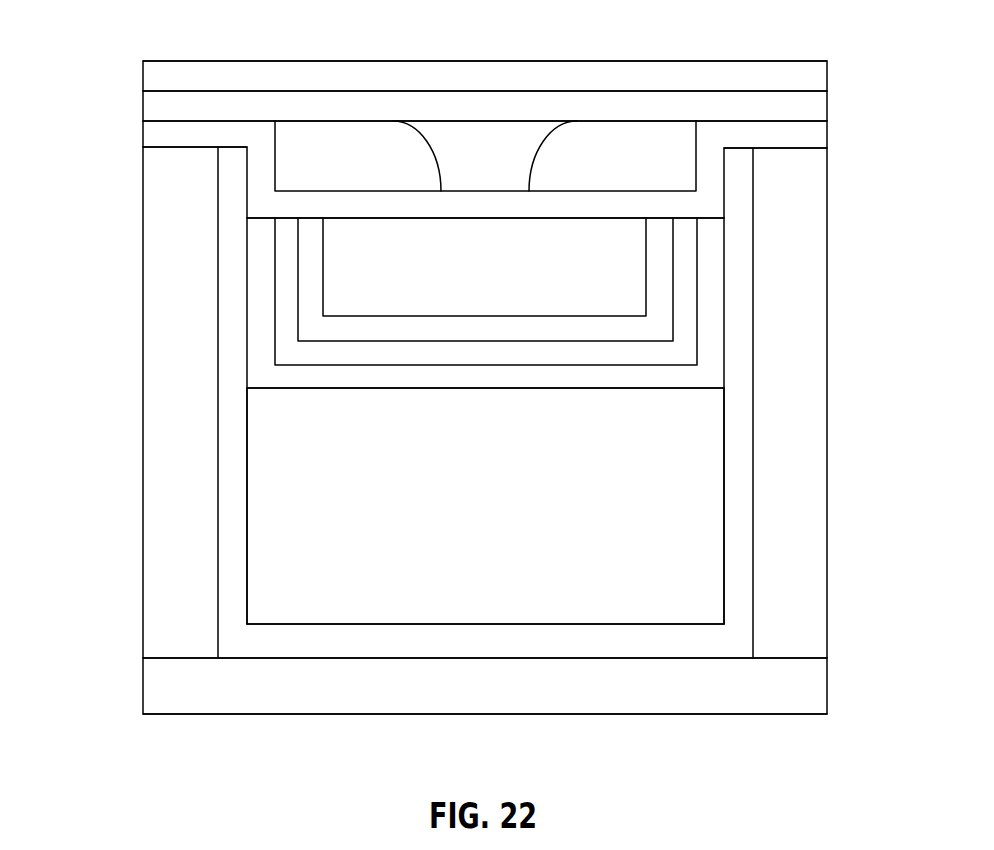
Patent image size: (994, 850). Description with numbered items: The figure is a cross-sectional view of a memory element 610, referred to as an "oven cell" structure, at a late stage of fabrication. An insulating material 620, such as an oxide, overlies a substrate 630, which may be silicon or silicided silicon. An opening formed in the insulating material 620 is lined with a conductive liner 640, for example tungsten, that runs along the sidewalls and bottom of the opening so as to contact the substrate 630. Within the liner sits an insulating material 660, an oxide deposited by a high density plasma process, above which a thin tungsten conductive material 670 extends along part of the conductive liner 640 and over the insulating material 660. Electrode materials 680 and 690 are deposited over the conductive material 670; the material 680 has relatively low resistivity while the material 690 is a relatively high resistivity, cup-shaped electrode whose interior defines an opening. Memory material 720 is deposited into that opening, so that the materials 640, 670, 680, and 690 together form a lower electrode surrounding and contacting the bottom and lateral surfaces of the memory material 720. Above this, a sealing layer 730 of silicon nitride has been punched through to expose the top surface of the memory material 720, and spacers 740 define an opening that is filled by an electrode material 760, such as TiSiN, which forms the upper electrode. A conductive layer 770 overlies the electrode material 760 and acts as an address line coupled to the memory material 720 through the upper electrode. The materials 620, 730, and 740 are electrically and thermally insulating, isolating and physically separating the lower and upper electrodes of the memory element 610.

The memory element 610 is at (120, 572).
The insulating material 620 is at (473, 402).
The substrate 630 is at (527, 684).
The conductive liner 640 is at (485, 692).
The insulating material 660 is at (532, 574).
The conductive material 670 is at (489, 489).
The electrode material 680 is at (486, 489).
The electrode material 690 is at (485, 489).
The memory material 720 is at (341, 263).
The sealing layer 730 is at (534, 163).
The spacers 740 is at (512, 108).
The electrode material 760 is at (534, 97).
The conductive layer 770 is at (534, 65).